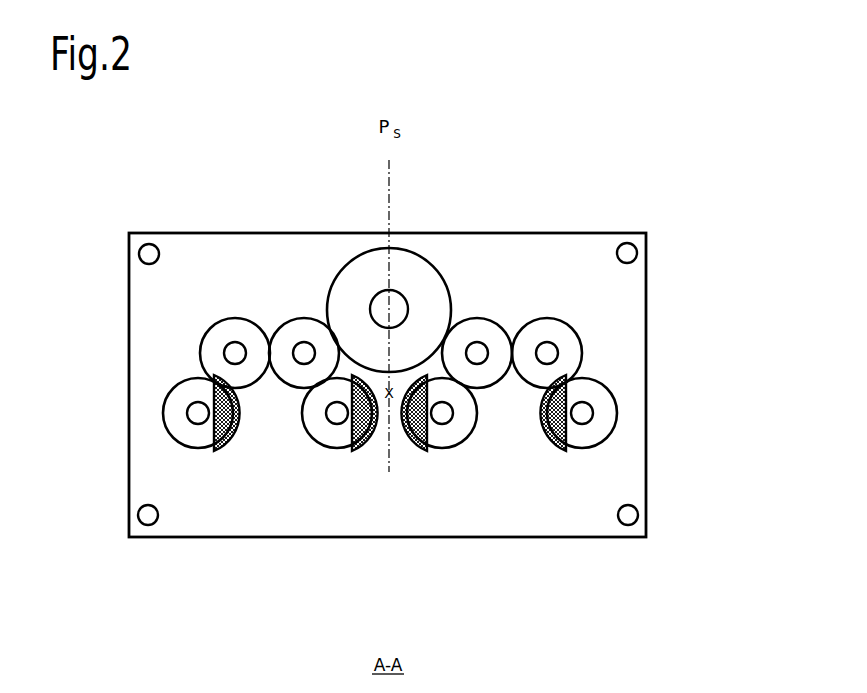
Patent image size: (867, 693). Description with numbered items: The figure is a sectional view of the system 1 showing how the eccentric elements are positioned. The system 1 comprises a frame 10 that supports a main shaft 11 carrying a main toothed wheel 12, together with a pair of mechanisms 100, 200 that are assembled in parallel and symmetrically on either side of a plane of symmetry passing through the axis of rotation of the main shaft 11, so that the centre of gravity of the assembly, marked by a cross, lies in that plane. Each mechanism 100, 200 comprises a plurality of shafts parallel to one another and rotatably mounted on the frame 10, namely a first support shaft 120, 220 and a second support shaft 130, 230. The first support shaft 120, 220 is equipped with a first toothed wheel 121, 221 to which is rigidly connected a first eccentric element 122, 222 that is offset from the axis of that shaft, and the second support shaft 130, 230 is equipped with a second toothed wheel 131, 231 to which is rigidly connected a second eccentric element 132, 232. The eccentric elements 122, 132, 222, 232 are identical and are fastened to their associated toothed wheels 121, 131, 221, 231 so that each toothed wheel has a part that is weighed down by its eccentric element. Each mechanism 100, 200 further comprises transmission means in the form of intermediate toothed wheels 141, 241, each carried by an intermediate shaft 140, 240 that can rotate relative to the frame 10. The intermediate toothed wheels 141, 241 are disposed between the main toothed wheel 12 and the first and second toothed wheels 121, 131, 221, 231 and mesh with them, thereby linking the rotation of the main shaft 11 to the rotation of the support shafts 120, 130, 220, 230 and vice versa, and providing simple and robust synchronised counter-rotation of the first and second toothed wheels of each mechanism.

The system 1 is at (486, 175).
The frame 10 is at (130, 263).
The main shaft 11 is at (398, 297).
The main toothed wheel 12 is at (357, 285).
The mechanism 100 is at (160, 375).
The mechanism 200 is at (623, 368).
The first support shaft 120 is at (197, 418).
The first toothed wheel 121 is at (208, 433).
The first eccentric element 122 is at (219, 450).
The second support shaft 130 is at (337, 418).
The second toothed wheel 131 is at (342, 433).
The second eccentric element 132 is at (356, 450).
The intermediate shaft 140 is at (235, 342).
The intermediate toothed wheel 141 is at (255, 343).
The first support shaft 220 is at (582, 418).
The first toothed wheel 221 is at (600, 427).
The first eccentric element 222 is at (555, 450).
The second support shaft 230 is at (442, 418).
The second toothed wheel 231 is at (459, 433).
The second eccentric element 232 is at (422, 450).
The intermediate shaft 240 is at (480, 350).
The intermediate toothed wheel 241 is at (499, 343).